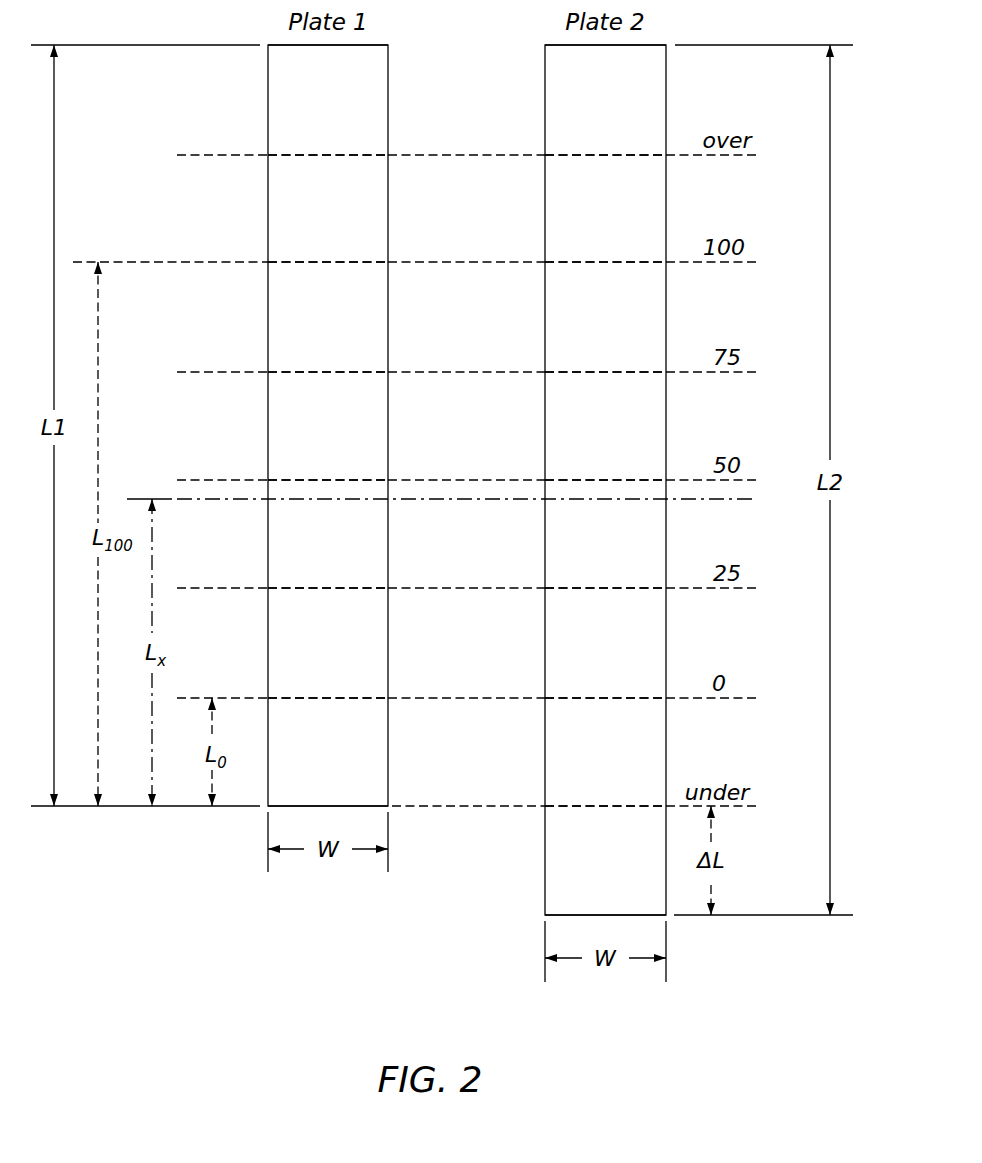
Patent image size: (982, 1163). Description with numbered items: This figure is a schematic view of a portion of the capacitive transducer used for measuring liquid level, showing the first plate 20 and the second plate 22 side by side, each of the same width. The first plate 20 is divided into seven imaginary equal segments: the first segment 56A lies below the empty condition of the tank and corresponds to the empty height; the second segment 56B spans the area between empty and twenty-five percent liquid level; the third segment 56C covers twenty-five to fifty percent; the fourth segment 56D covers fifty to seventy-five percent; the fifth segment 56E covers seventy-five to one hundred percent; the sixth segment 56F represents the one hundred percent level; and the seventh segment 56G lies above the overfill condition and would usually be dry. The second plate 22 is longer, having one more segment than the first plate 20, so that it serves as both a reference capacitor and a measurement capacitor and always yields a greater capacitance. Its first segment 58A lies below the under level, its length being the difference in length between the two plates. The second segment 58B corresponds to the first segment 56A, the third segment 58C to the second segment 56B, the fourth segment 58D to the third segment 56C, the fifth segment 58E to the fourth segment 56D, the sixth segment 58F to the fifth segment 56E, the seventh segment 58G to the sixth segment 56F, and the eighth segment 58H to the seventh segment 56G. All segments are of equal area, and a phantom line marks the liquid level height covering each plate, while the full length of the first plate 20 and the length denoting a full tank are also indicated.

The first plate 20 is at (388, 83).
The second plate 22 is at (551, 71).
The first segment 56A is at (347, 769).
The second segment 56B is at (347, 661).
The third segment 56C is at (347, 552).
The fourth segment 56D is at (347, 444).
The fifth segment 56E is at (347, 334).
The sixth segment 56F is at (347, 224).
The seventh segment 56G is at (347, 115).
The first segment 58A is at (625, 877).
The second segment 58B is at (625, 769).
The third segment 58C is at (625, 661).
The fourth segment 58D is at (625, 552).
The fifth segment 58E is at (625, 444).
The sixth segment 58F is at (625, 334).
The seventh segment 58G is at (625, 224).
The eighth segment 58H is at (625, 115).